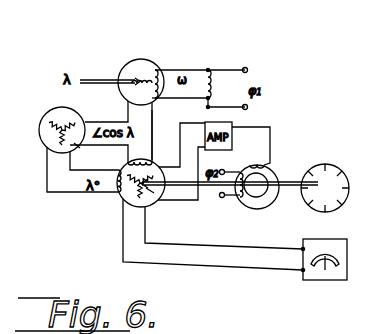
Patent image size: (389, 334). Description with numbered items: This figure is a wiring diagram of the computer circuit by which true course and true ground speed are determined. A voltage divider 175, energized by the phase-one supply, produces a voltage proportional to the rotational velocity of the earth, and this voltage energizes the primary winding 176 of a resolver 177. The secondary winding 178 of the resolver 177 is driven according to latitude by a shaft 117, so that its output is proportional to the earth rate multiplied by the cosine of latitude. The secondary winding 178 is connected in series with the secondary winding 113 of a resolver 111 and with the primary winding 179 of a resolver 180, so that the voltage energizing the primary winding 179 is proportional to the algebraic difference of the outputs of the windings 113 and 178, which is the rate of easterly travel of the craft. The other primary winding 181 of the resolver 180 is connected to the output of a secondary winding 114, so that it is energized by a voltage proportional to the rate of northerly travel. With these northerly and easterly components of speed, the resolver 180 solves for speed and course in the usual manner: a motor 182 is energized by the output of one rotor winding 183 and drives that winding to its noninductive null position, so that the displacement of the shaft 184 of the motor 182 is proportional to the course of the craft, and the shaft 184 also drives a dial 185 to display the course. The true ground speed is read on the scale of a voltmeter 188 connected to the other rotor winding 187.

The resolver 111 is at (81, 151).
The secondary winding 113 is at (72, 118).
The secondary winding 114 is at (61, 110).
The shaft 117 is at (97, 78).
The voltage divider 175 is at (211, 82).
The primary winding 176 is at (160, 73).
The resolver 177 is at (163, 105).
The secondary winding 178 is at (143, 62).
The primary winding 179 is at (147, 160).
The resolver 180 is at (120, 207).
The primary winding 181 is at (117, 192).
The motor 182 is at (275, 163).
The rotor winding 183 is at (147, 205).
The shaft 184 is at (208, 190).
The dial 185 is at (334, 168).
The rotor winding 187 is at (153, 190).
The voltmeter 188 is at (329, 282).